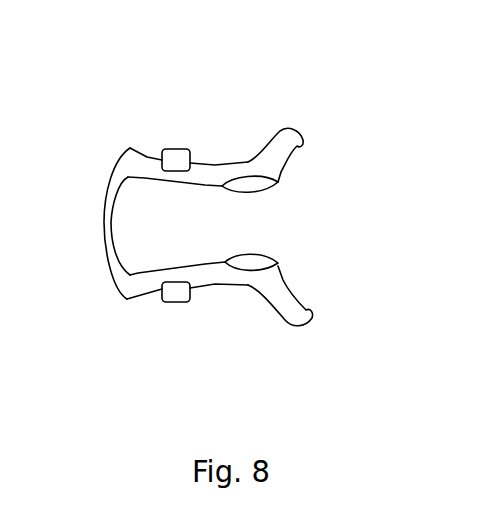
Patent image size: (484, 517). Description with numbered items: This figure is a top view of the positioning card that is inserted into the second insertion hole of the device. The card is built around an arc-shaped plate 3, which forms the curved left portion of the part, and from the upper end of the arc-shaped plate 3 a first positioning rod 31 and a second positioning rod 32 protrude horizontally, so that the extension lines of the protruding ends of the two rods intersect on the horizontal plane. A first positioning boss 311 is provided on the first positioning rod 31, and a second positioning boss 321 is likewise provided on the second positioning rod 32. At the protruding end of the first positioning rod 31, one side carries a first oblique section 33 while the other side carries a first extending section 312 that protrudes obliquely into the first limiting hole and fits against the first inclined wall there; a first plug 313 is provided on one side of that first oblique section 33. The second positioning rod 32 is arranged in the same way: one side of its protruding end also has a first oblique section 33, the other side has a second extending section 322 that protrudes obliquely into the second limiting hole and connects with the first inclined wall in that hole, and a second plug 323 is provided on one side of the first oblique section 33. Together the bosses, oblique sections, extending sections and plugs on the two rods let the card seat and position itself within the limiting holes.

The arc-shaped plate 3 is at (78, 217).
The first positioning rod 31 is at (242, 96).
The first positioning boss 311 is at (165, 125).
The first extending section 312 is at (318, 132).
The first plug 313 is at (315, 178).
The second positioning rod 32 is at (256, 351).
The second positioning boss 321 is at (172, 318).
The second extending section 322 is at (318, 320).
The second plug 323 is at (318, 276).
The first oblique section 33 is at (332, 230).